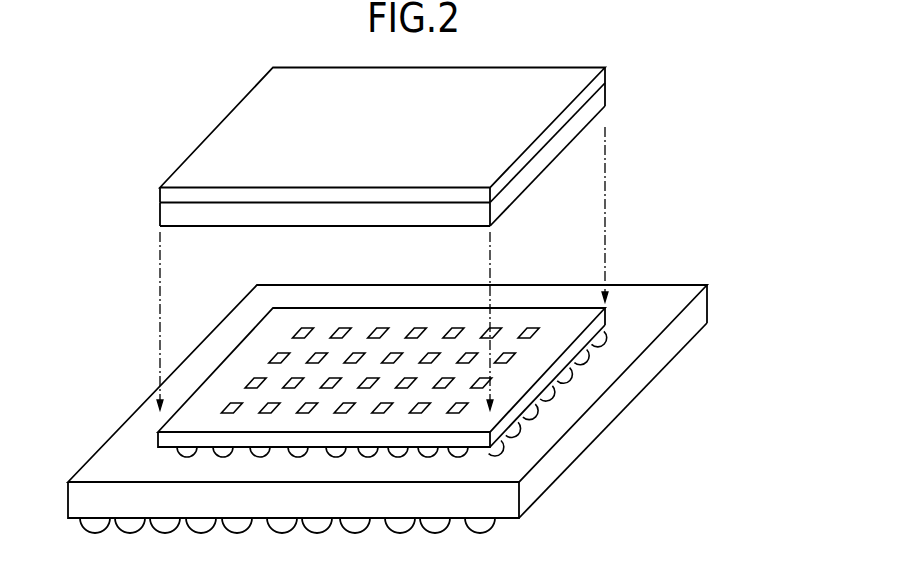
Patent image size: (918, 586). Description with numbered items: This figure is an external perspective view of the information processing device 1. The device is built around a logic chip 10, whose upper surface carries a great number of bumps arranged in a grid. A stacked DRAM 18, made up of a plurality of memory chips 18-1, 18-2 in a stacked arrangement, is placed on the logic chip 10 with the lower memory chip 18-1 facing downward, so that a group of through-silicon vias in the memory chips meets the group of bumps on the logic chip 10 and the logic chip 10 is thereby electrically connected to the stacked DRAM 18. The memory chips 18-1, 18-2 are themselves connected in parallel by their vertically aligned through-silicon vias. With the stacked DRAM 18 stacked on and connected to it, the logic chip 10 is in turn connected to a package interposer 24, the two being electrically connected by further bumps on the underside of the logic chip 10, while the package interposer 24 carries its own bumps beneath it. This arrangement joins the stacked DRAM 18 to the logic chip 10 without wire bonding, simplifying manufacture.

The information processing device 1 is at (417, 330).
The logic chip 10 is at (523, 312).
The stacked DRAM 18 is at (339, 150).
The memory chip 18-1 is at (172, 215).
The memory chip 18-2 is at (163, 191).
The package interposer 24 is at (625, 393).